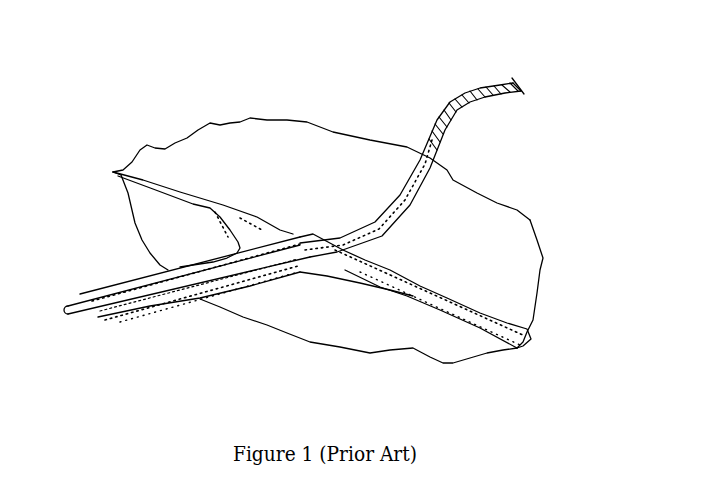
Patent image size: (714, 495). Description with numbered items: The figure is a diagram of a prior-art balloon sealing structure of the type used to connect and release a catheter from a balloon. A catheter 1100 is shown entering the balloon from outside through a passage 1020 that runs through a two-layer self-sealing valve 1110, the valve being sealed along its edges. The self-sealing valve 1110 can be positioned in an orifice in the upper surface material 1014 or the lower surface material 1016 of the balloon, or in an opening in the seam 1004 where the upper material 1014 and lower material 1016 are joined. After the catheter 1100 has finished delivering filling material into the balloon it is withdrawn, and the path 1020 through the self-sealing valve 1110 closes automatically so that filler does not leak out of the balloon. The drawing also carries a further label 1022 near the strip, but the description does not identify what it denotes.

The seam 1004 is at (523, 312).
The upper surface material 1014 is at (503, 228).
The lower surface material 1016 is at (360, 332).
The passage 1020 is at (317, 233).
The adhesive layer 1022 is at (162, 313).
The catheter 1100 is at (463, 93).
The two-layer self-sealing valve 1110 is at (257, 210).